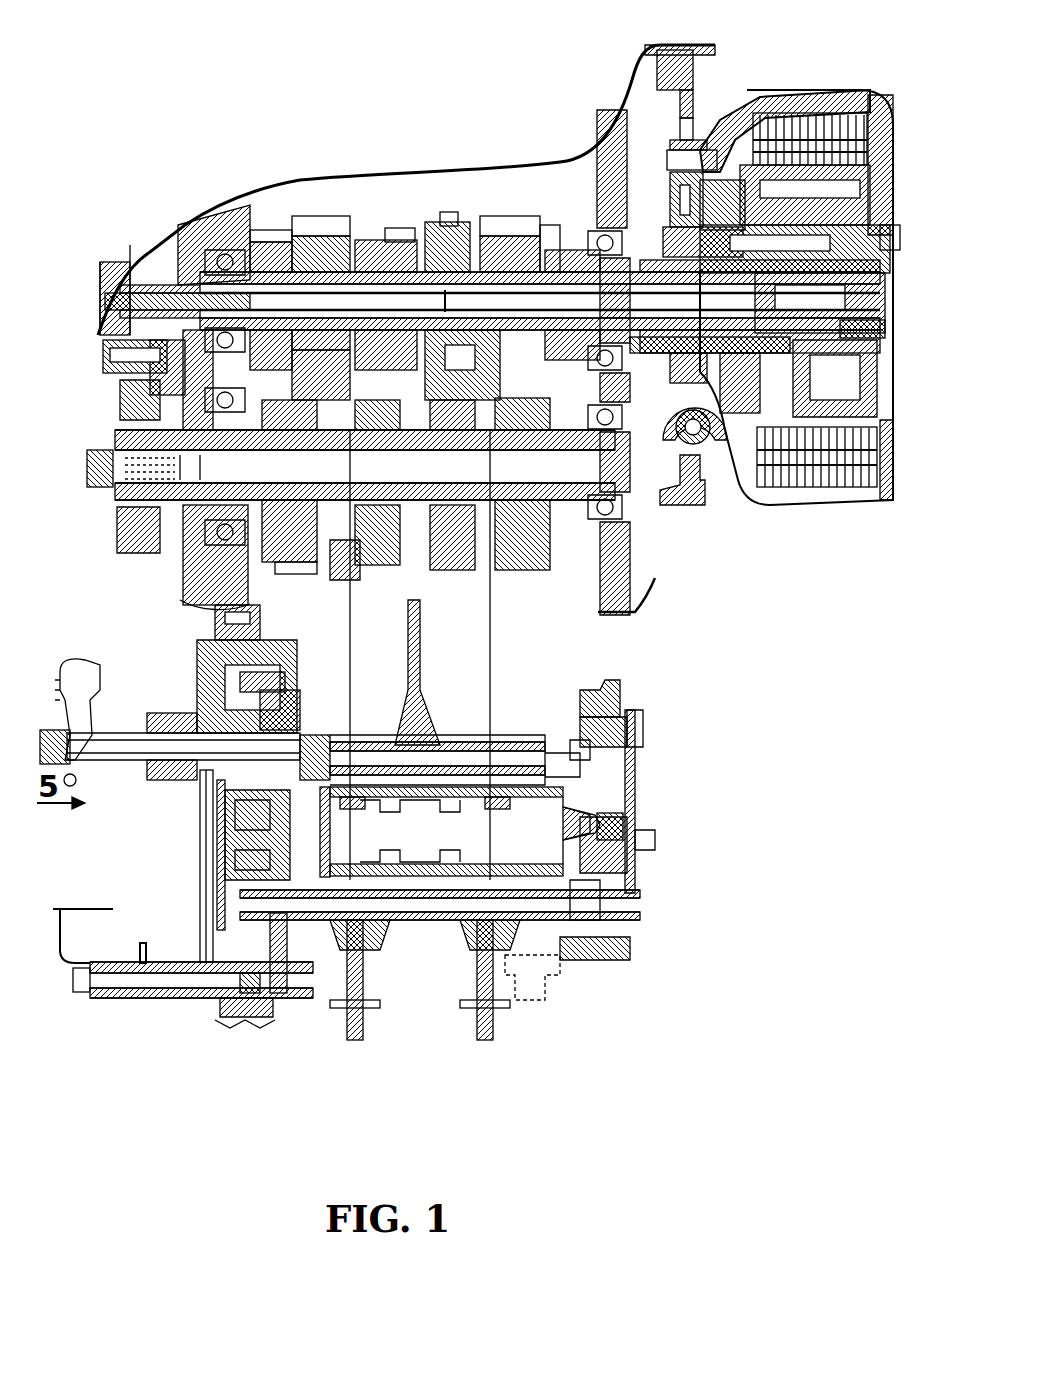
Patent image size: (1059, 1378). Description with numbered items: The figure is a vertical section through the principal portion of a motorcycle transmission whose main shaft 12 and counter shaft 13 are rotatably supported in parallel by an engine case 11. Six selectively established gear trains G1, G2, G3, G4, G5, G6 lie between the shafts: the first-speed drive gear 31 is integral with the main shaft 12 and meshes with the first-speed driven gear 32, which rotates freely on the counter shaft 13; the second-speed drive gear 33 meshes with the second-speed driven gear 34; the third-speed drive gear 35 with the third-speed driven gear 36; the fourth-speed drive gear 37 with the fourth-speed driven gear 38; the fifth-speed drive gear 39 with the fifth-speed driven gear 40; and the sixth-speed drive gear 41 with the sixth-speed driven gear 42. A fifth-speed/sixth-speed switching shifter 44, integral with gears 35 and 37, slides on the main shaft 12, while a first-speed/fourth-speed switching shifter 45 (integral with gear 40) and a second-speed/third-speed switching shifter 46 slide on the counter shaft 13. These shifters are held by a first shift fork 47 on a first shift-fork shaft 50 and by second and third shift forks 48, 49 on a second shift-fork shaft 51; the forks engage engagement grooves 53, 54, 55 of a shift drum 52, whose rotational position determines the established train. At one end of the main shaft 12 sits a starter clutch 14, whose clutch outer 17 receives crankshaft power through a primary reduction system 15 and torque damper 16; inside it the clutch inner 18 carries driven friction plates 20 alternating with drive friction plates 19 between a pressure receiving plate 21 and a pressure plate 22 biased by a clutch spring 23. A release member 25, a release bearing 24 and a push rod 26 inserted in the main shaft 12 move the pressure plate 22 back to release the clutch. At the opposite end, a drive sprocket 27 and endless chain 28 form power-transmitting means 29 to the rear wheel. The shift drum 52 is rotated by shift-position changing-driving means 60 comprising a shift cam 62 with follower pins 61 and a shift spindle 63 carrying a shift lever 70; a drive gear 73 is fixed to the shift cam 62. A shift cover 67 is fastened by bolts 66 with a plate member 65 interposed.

The engine case 11 is at (192, 598).
The main shaft 12 is at (352, 262).
The counter shaft 13 is at (338, 585).
The starter clutch 14 is at (760, 180).
The primary reduction system 15 is at (655, 76).
The torque damper 16 is at (702, 448).
The clutch outer 17 is at (775, 100).
The clutch inner 18 is at (825, 412).
The drive friction plates 19 is at (805, 490).
The driven friction plates 20 is at (815, 118).
The pressure receiving plate 21 is at (725, 440).
The pressure plate 22 is at (890, 120).
The clutch spring 23 is at (886, 245).
The release bearing 24 is at (866, 330).
The release member 25 is at (866, 300).
The push rod 26 is at (442, 290).
The drive sprocket 27 is at (122, 393).
The endless chain 28 is at (110, 350).
The power-transmitting means 29 is at (108, 504).
The first-speed drive gear 31 is at (558, 250).
The first-speed driven gear 32 is at (600, 572).
The second-speed drive gear 33 is at (230, 225).
The second-speed driven gear 34 is at (215, 628).
The third-speed drive gear 35 is at (380, 240).
The third-speed driven gear 36 is at (398, 565).
The fourth-speed drive gear 37 is at (450, 225).
The fourth-speed driven gear 38 is at (448, 568).
The fifth-speed drive gear 39 is at (528, 224).
The fifth-speed driven gear 40 is at (518, 556).
The sixth-speed drive gear 41 is at (280, 240).
The sixth-speed driven gear 42 is at (318, 555).
The fifth-speed/sixth-speed switching shifter 44 is at (402, 235).
The first-speed/fourth-speed switching shifter 45 is at (492, 400).
The second-speed/third-speed switching shifter 46 is at (342, 395).
The first shift fork 47 is at (422, 685).
The second shift fork 48 is at (496, 1022).
The third shift fork 49 is at (366, 1028).
The first shift-fork shaft 50 is at (508, 740).
The second shift-fork shaft 51 is at (430, 947).
The shift drum 52 is at (462, 785).
The engagement groove 53 is at (420, 888).
The engagement groove 54 is at (498, 802).
The engagement groove 55 is at (358, 810).
The shift-position changing-driving means 60 is at (215, 805).
The follower pins 61 is at (280, 770).
The shift cam 62 is at (235, 905).
The shift spindle 63 is at (265, 680).
The plate member 65 is at (268, 1020).
The bolts 66 is at (200, 663).
The shift cover 67 is at (195, 785).
The shift lever 70 is at (100, 665).
The drive gear 73 is at (342, 742).
The first-speed gear train G1 is at (566, 588).
The second-speed gear train G2 is at (270, 235).
The third-speed gear train G3 is at (393, 592).
The fourth-speed gear train G4 is at (456, 592).
The fifth-speed gear train G5 is at (500, 212).
The sixth-speed gear train G6 is at (327, 218).